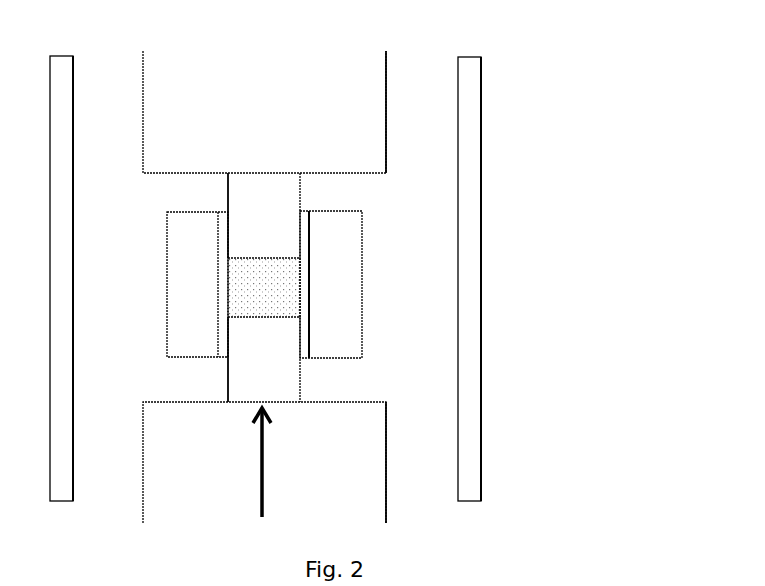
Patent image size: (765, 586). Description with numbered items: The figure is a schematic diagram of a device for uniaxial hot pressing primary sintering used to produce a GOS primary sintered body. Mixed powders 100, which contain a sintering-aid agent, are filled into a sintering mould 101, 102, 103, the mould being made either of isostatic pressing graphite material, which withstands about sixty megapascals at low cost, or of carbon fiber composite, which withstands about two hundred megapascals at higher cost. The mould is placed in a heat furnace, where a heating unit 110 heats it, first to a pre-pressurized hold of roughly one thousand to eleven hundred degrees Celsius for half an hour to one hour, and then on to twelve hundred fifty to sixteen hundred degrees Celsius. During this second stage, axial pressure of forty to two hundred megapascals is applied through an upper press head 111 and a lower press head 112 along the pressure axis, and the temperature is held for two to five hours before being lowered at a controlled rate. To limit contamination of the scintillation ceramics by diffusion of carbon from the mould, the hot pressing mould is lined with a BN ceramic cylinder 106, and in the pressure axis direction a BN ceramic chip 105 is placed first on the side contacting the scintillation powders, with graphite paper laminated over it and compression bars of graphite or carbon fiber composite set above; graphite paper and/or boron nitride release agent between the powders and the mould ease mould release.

The mixed powders 100 is at (270, 310).
The sintering mould 101 is at (347, 246).
The sintering mould 102 is at (291, 380).
The sintering mould 103 is at (279, 198).
The BN ceramic chip 105 is at (272, 308).
The BN ceramic cylinder 106 is at (305, 288).
The heating unit 110 is at (465, 169).
The upper press head 111 is at (330, 69).
The lower press head 112 is at (363, 467).